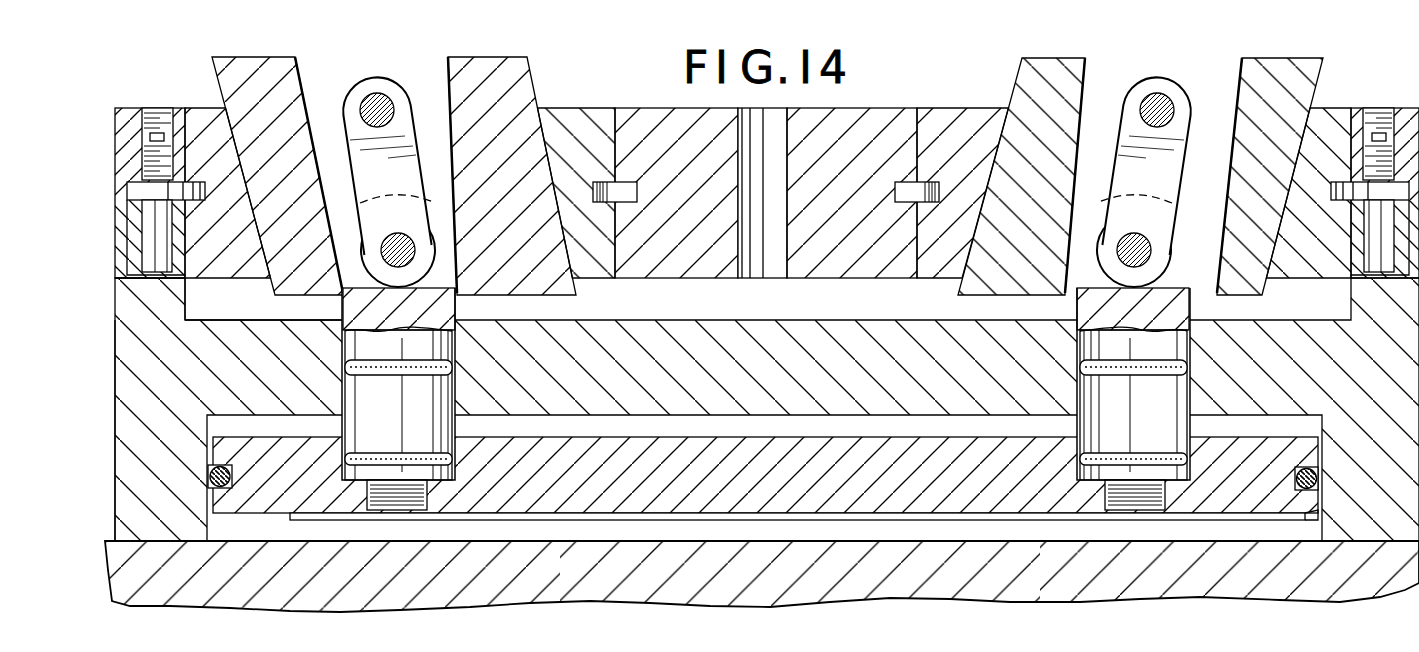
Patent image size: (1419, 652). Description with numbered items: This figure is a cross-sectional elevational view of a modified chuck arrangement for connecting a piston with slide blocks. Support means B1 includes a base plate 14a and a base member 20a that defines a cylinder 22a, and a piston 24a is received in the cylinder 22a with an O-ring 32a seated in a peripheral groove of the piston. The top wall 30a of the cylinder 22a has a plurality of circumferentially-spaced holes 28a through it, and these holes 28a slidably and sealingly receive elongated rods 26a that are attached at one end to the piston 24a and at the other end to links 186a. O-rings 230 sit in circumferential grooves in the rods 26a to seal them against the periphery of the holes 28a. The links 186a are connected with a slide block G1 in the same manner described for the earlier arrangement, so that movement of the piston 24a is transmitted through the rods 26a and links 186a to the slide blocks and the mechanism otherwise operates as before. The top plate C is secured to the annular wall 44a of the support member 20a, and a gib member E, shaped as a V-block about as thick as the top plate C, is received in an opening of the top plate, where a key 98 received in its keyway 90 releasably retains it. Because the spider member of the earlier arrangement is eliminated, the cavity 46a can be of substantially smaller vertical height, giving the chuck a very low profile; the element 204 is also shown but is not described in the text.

The base plate 14a is at (125, 555).
The base member 20a is at (115, 415).
The cylinder 22a is at (820, 420).
The piston 24a is at (622, 460).
The elongated rods 26a is at (436, 348).
The holes 28a is at (448, 395).
The top wall 30a is at (633, 328).
The O-ring 32a is at (208, 473).
The annular wall 44a is at (125, 292).
The cavity 46a is at (243, 325).
The keyway 90 is at (205, 196).
The key 98 is at (628, 193).
The links 186a is at (400, 115).
The O-rings 230 is at (440, 367).
The upper member 204 is at (748, 6).
The top plate C is at (106, 103).
The gib member E is at (212, 119).
The slide block G1 is at (292, 50).
The support means B1 is at (107, 334).